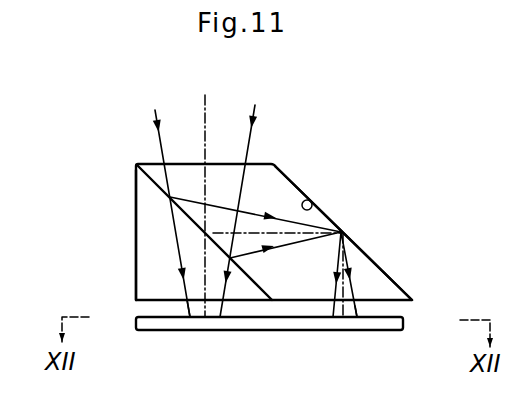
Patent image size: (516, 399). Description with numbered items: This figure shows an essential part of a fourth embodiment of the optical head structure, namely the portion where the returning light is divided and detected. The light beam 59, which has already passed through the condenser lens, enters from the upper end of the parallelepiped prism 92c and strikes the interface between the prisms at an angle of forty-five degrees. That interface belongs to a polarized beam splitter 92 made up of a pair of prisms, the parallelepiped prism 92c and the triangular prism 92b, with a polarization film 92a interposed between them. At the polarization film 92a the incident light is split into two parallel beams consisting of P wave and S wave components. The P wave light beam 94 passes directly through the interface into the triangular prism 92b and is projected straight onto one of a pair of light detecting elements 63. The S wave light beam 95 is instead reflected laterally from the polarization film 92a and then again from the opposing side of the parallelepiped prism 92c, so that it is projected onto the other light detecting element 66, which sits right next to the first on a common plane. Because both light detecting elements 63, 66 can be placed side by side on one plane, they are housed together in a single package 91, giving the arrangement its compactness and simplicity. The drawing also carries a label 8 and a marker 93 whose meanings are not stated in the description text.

The light beam 59 is at (258, 106).
The polarized beam splitter 92 is at (294, 166).
The polarization film 92a is at (148, 172).
The triangular prism 92b is at (152, 250).
The parallelepiped prism 92c is at (280, 193).
The reflecting point 93 is at (313, 206).
The P wave light beam 94 is at (170, 237).
The S wave light beam 95 is at (350, 262).
The light detecting element 63 is at (163, 310).
The light detecting element 66 is at (381, 306).
The package 91 is at (282, 332).
The partial reference numeral 8 is at (515, 190).